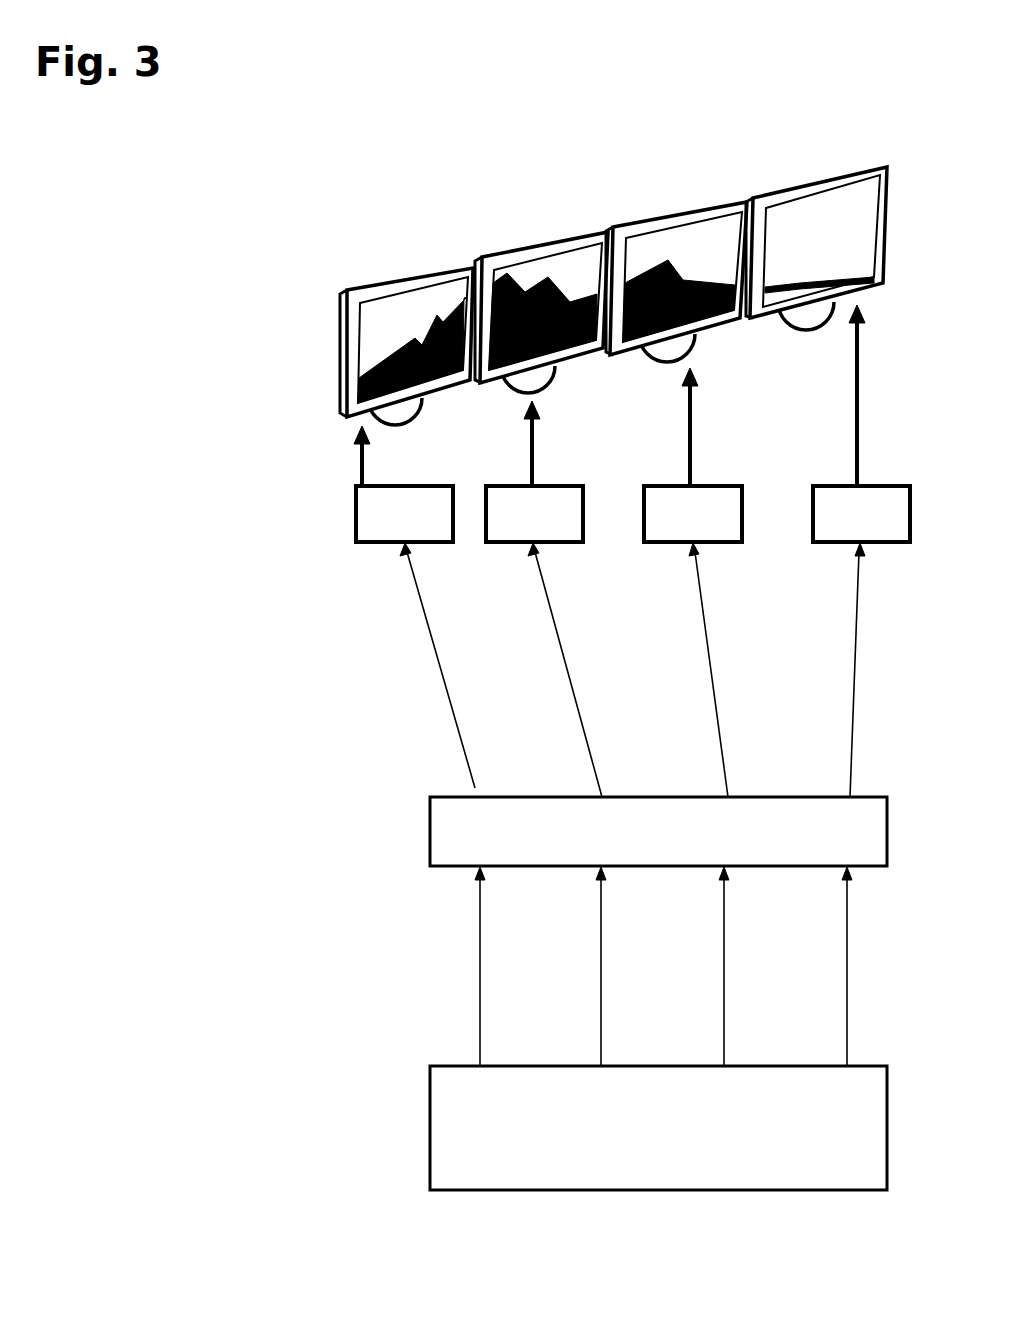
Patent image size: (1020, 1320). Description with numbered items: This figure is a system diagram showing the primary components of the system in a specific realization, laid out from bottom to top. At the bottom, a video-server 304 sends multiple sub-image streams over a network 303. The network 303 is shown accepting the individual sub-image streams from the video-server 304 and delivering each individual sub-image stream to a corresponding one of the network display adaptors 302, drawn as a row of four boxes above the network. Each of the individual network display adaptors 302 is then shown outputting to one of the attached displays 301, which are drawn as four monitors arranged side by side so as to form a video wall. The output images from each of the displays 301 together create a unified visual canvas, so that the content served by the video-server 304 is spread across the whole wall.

The displays 301 is at (325, 369).
The network display adaptors 302 is at (325, 369).
The network 303 is at (568, 835).
The video-server 304 is at (568, 1028).